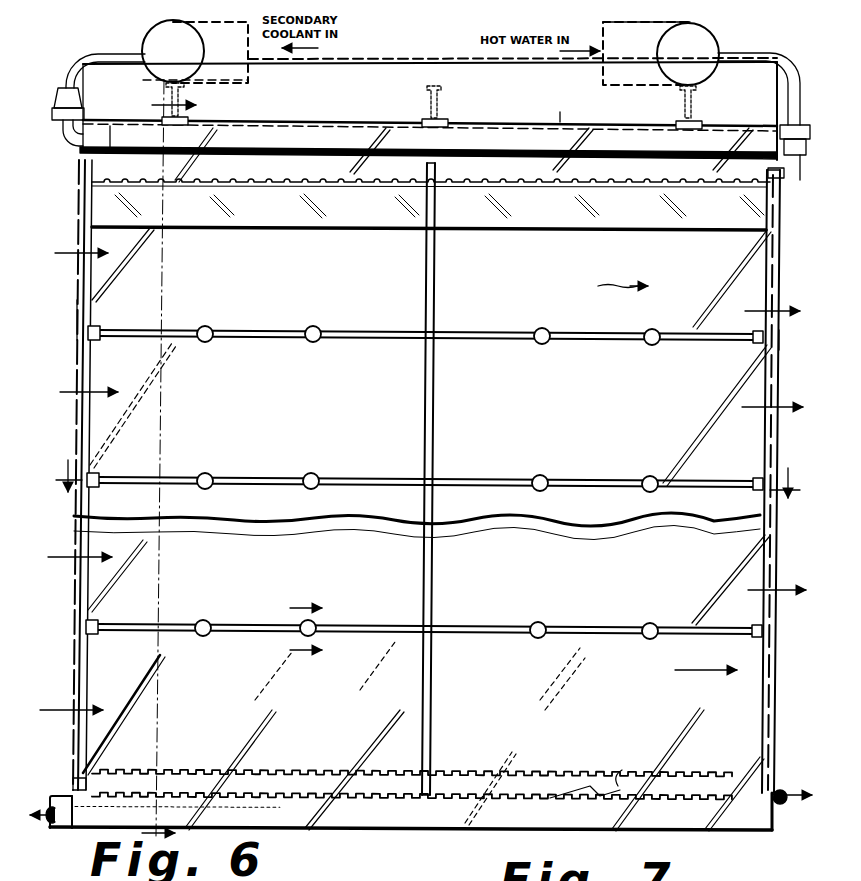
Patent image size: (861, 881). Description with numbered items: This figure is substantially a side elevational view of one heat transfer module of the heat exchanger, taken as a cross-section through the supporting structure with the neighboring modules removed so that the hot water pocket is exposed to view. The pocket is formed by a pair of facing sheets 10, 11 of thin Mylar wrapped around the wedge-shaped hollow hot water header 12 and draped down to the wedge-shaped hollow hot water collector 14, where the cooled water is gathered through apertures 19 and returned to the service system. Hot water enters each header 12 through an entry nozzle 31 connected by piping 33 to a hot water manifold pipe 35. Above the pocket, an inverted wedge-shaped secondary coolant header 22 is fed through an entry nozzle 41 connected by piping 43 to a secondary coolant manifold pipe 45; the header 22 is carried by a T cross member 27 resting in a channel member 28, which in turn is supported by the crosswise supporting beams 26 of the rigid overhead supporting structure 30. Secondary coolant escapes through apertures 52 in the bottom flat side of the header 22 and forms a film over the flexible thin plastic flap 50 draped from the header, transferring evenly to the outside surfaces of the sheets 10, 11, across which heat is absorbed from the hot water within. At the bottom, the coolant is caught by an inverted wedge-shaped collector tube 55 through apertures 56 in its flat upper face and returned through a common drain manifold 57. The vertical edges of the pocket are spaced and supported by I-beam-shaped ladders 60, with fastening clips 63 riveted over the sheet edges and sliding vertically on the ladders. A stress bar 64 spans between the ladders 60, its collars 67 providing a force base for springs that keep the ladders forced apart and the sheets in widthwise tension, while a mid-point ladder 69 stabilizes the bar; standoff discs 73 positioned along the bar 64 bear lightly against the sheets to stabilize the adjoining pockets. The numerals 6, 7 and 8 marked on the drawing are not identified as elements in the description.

The section line 6- 6 is at (102, 826).
The section line 7- 7 is at (425, 480).
The flow direction 8 is at (167, 98).
The facing sheet 10 is at (290, 629).
The facing sheet 11 is at (290, 404).
The hot water header 12 is at (116, 139).
The hot water collector 14 is at (688, 830).
The aperture 19 is at (618, 780).
The secondary coolant header 22 is at (85, 184).
The crosswise supporting beam 26 is at (187, 91).
The T cross member 27 is at (572, 130).
The channel member 28 is at (188, 129).
The overhead supporting structure 30 is at (384, 62).
The entry nozzle 31 is at (787, 186).
The piping 33 is at (792, 88).
The hot water manifold pipe 35 is at (718, 37).
The entry nozzle 41 is at (80, 162).
The piping 43 is at (118, 49).
The secondary coolant manifold pipe 45 is at (248, 70).
The flexible thin plastic flap 50 is at (256, 218).
The aperture 52 is at (412, 184).
The collector tube 55 is at (562, 791).
The aperture 56 is at (326, 772).
The common drain manifold 57 is at (786, 784).
The beam-shaped ladder 60 is at (764, 374).
The fastening clip 63 is at (73, 322).
The stress bar 64 is at (382, 328).
The collar 67 is at (100, 330).
The mid-point ladder 69 is at (436, 442).
The disc 73 is at (210, 328).